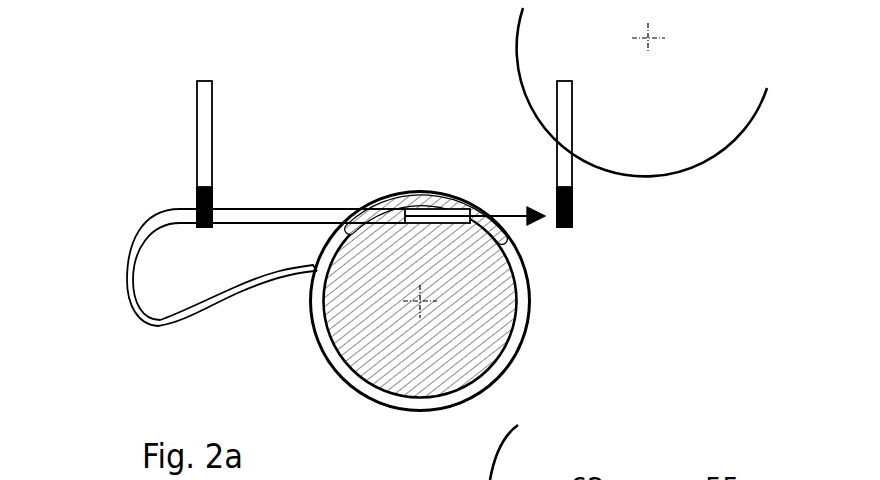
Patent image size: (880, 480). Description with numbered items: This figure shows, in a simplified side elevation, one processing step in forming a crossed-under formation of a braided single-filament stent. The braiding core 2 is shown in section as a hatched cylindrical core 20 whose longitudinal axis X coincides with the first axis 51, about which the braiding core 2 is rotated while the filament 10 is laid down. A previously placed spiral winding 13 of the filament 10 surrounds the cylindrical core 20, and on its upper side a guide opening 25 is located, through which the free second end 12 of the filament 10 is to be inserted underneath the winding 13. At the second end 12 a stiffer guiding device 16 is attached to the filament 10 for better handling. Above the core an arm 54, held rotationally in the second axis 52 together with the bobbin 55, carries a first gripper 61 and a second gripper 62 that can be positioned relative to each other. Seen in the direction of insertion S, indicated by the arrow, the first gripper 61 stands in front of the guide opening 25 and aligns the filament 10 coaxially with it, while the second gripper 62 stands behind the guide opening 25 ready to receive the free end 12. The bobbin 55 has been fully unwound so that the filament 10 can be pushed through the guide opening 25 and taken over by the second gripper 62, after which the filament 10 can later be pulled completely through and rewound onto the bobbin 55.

The braiding core 2 is at (382, 308).
The cylindrical core 20 is at (362, 335).
The filament 10 is at (130, 310).
The second end 12 is at (388, 197).
The winding 13 is at (317, 313).
The guiding device 16 is at (308, 217).
The guide opening 25 is at (425, 193).
The first axis 51 is at (420, 301).
The second axis 52 is at (648, 40).
The arm 54 is at (207, 106).
The bobbin 55 is at (688, 133).
The first gripper 61 is at (197, 190).
The second gripper 62 is at (573, 200).
The direction of insertion S is at (510, 207).